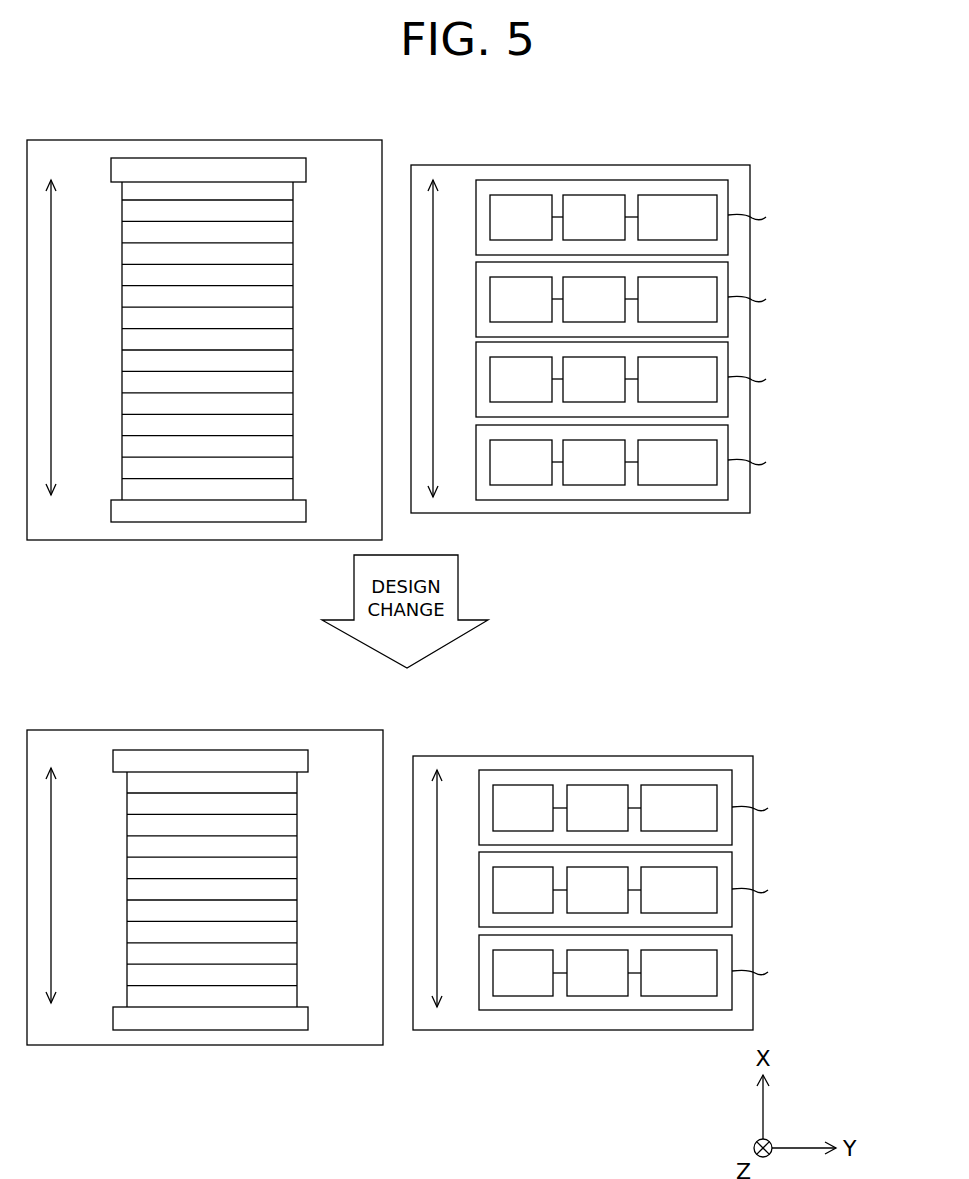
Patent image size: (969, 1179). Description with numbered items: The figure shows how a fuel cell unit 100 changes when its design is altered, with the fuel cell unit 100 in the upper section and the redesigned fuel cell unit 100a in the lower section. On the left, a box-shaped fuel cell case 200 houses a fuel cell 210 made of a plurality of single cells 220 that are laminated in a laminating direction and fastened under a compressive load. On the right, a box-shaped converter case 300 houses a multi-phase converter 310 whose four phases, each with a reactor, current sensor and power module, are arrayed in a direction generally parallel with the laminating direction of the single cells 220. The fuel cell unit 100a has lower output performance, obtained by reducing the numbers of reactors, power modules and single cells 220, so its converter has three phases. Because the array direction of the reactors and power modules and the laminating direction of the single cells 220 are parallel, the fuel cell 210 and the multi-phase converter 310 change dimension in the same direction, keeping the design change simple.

The fuel cell unit 100 is at (813, 130).
The fuel cell unit 100a is at (817, 715).
The fuel cell case 200 is at (333, 140).
The fuel cell 210 is at (302, 181).
The single cells 220 is at (140, 220).
The converter case 300 is at (690, 165).
The multi-phase converter 310 is at (832, 205).